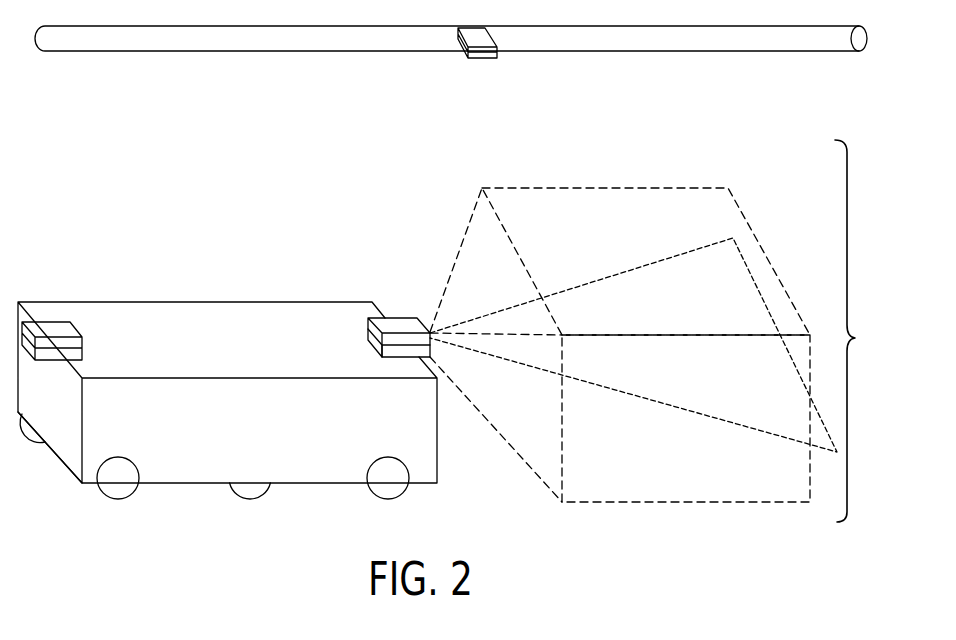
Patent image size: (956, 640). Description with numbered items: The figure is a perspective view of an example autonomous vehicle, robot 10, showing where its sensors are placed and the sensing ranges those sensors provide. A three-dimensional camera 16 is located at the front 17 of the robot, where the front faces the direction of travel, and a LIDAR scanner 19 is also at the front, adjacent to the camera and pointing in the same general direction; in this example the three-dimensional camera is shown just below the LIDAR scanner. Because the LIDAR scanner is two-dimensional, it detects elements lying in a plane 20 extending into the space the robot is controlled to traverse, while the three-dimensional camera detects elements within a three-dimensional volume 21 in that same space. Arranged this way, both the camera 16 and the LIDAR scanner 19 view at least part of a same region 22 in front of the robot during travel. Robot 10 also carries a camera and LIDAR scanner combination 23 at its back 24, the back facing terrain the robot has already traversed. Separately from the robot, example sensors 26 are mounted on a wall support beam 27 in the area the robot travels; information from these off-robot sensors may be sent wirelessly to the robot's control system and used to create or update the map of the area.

The robot 10 is at (257, 334).
The 3D camera 16 is at (382, 352).
The front 17 is at (437, 458).
The LIDAR scanner 19 is at (402, 322).
The plane 20 is at (610, 274).
The 3D volume 21 is at (630, 198).
The region 22 is at (858, 331).
The 3D camera/LIDAR scanner combination 23 is at (45, 325).
The back 24 is at (60, 458).
The sensors 26 is at (472, 59).
The wall support beam 27 is at (137, 52).